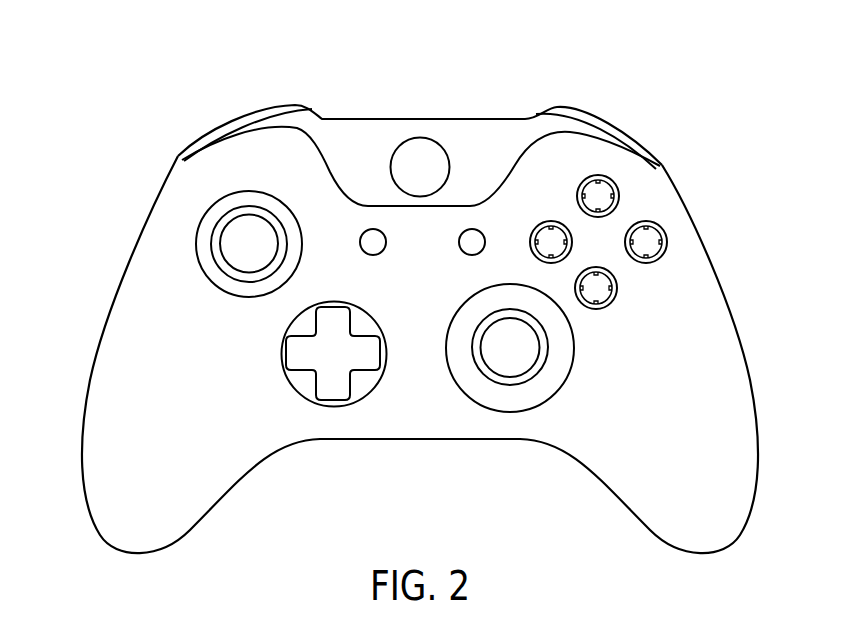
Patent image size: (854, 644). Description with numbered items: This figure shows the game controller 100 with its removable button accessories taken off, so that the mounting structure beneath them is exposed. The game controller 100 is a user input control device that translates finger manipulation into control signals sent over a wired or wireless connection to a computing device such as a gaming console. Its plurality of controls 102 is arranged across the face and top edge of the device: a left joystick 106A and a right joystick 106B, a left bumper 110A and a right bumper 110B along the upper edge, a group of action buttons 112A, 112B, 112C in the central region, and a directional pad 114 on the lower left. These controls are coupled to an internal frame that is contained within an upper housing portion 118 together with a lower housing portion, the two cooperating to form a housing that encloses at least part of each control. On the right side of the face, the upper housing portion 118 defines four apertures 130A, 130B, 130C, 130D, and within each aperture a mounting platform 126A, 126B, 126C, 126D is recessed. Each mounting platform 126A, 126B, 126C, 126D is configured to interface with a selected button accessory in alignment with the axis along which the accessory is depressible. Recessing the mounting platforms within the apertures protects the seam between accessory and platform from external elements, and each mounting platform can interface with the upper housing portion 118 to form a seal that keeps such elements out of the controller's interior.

The game controller 100 is at (390, 294).
The plurality of controls 102 is at (396, 311).
The left joystick 106A is at (243, 278).
The right joystick 106B is at (527, 382).
The left bumper 110A is at (273, 106).
The right bumper 110B is at (598, 110).
The action button 112A is at (392, 160).
The action button 112B is at (369, 254).
The action button 112C is at (467, 254).
The directional pad 114 is at (358, 366).
The upper housing portion 118 is at (97, 346).
The mounting platform 126A is at (598, 197).
The mounting platform 126B is at (646, 243).
The mounting platform 126C is at (596, 289).
The mounting platform 126D is at (549, 243).
The aperture 130A is at (570, 192).
The aperture 130B is at (674, 248).
The aperture 130C is at (632, 294).
The aperture 130D is at (538, 243).